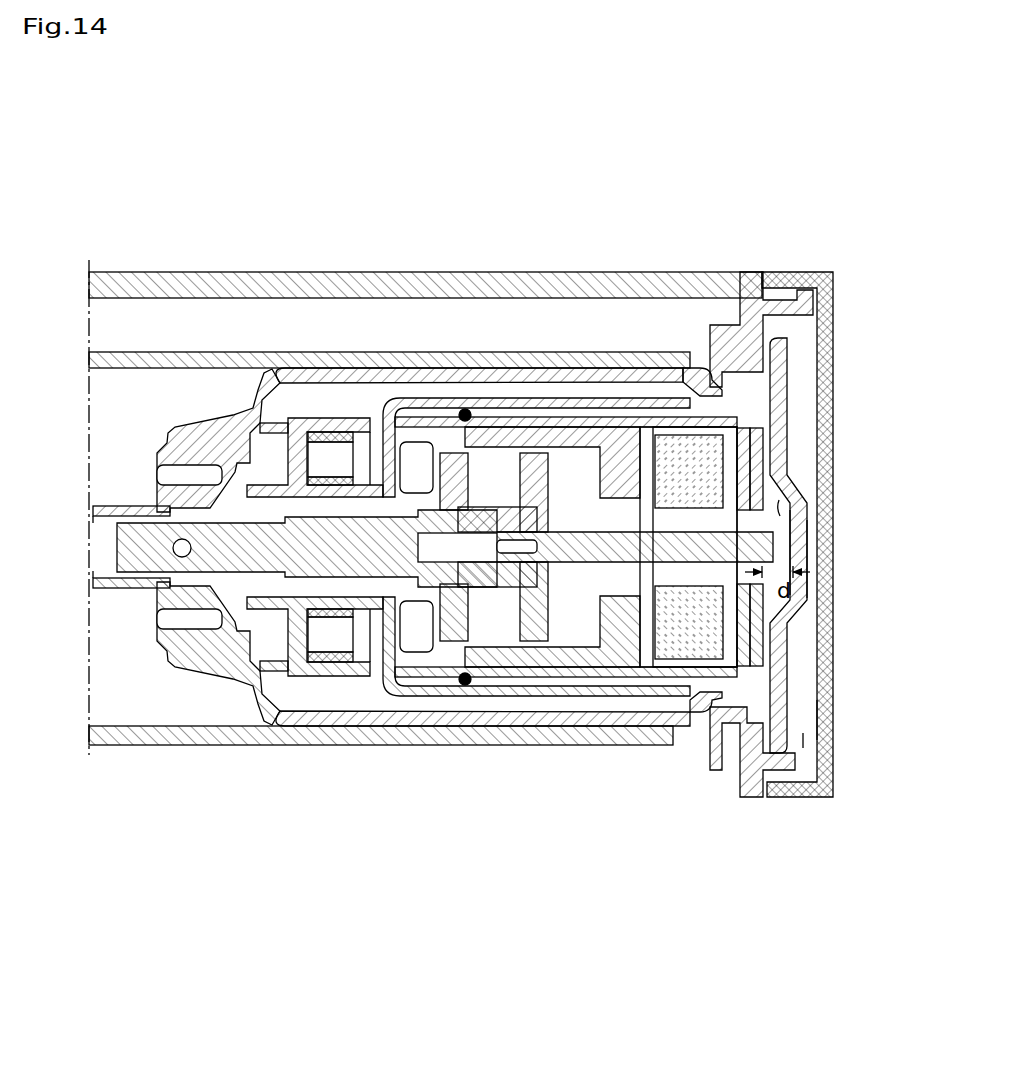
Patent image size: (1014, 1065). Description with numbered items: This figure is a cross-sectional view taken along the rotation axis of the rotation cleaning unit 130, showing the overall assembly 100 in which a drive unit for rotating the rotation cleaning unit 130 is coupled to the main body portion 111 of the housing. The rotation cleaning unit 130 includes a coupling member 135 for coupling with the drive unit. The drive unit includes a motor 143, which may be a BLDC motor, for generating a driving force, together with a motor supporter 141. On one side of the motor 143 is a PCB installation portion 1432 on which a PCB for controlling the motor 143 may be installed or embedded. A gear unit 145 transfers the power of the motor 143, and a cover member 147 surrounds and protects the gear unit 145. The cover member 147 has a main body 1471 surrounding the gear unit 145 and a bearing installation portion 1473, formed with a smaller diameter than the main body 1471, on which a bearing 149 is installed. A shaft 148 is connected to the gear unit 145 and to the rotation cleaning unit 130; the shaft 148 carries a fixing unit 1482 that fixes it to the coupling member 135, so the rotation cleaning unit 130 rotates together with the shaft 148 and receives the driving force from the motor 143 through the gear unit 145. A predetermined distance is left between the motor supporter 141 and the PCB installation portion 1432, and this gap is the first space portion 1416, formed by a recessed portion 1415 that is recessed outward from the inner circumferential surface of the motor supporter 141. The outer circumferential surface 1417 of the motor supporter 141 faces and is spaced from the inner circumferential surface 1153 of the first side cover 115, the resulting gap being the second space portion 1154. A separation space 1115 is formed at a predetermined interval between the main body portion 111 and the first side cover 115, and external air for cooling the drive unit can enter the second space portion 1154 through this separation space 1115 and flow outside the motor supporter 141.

The motor assembly 100 is at (823, 209).
The main body portion 111 is at (453, 272).
The first side cover 115 is at (828, 680).
The rotation cleaning unit 130 is at (556, 352).
The coupling member 135 is at (212, 432).
The motor supporter 141 is at (778, 438).
The motor 143 is at (704, 632).
The gear unit 145 is at (585, 670).
The cover member 147 is at (405, 700).
The shaft 148 is at (338, 538).
The bearing 149 is at (333, 676).
The separation space 1115 is at (761, 285).
The inner circumferential surface 1153 is at (817, 720).
The second space portion 1154 is at (805, 742).
The recessed portion 1415 is at (790, 528).
The first space portion 1416 is at (786, 504).
The outer circumferential surface 1417 is at (808, 590).
The PCB installation portion 1432 is at (757, 479).
The main body 1471 is at (508, 680).
The bearing installation portion 1473 is at (313, 662).
The fixing unit 1482 is at (178, 548).